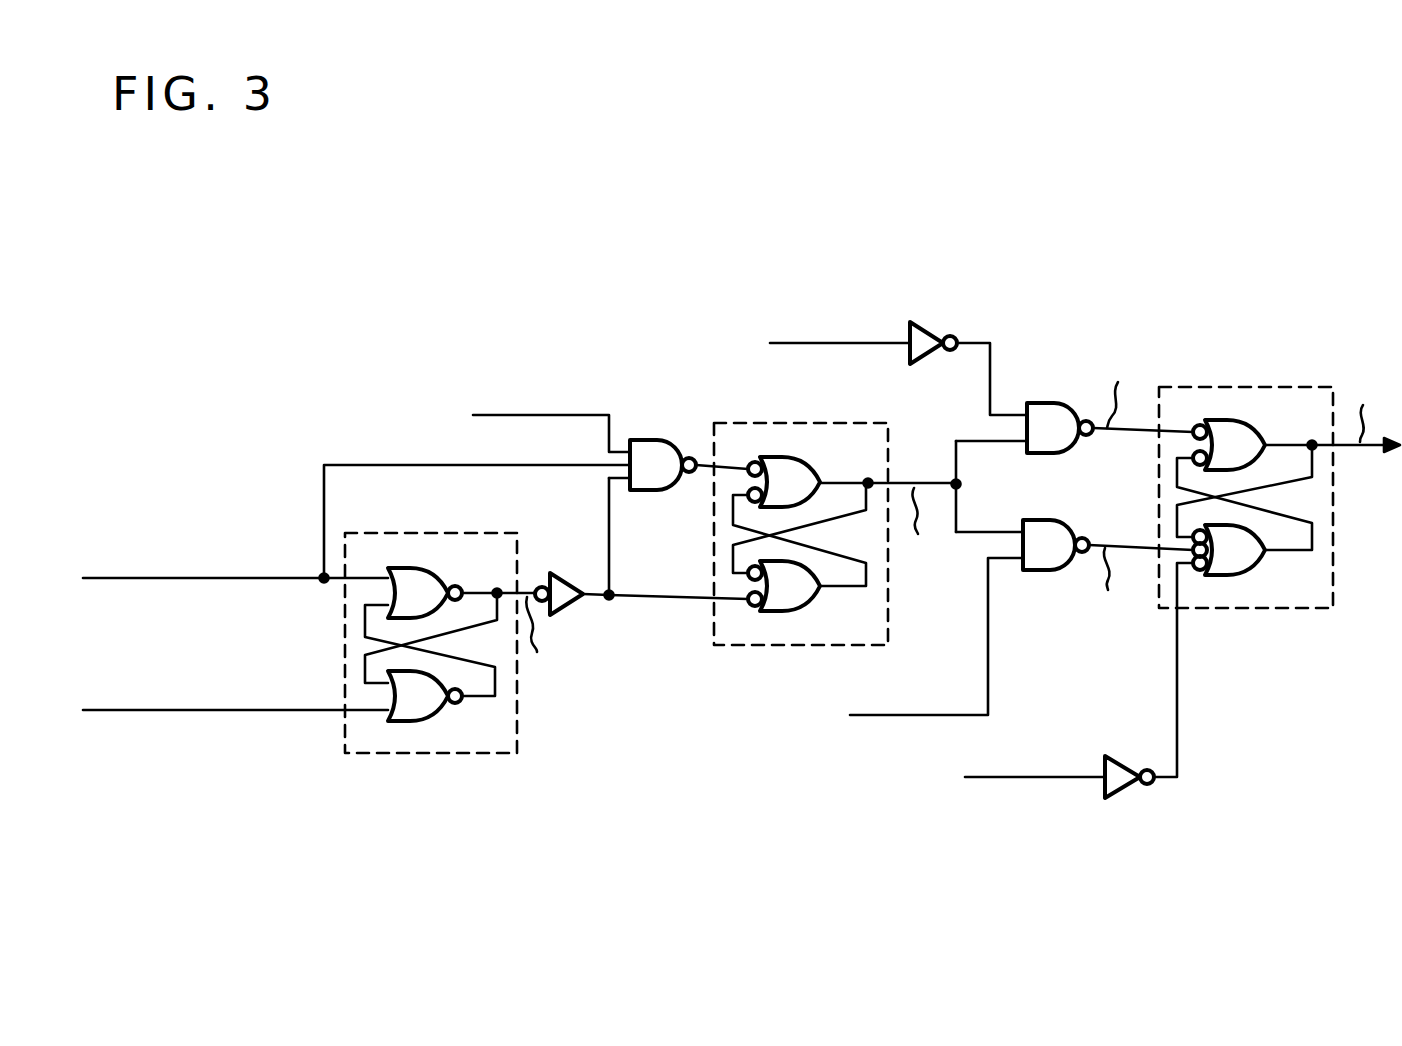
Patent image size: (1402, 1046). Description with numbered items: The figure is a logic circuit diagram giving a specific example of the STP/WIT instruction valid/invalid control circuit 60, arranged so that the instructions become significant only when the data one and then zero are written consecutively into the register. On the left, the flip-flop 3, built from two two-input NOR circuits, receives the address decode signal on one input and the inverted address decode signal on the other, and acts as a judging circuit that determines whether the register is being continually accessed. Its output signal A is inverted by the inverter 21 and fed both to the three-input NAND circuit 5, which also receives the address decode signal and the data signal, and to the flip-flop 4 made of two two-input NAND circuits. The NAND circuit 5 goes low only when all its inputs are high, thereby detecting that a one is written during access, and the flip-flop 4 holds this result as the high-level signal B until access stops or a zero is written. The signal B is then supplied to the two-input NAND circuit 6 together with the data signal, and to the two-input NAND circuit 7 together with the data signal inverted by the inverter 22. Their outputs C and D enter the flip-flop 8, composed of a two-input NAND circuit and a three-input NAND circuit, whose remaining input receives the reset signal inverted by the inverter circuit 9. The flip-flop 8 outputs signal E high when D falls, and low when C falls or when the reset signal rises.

The flip-flop 3 is at (427, 753).
The flip-flop 4 is at (735, 645).
The 3-input NAND circuit 5 is at (658, 440).
The 2-input NAND circuit 6 is at (1042, 570).
The 2-input NAND circuit 7 is at (1046, 403).
The flip-flop 8 is at (1255, 608).
The inverter circuit 9 is at (1122, 798).
The inverter 21 is at (556, 574).
The inverter 22 is at (925, 322).
The STP/WIT instruction valid/invalid control circuit 60 is at (1087, 232).